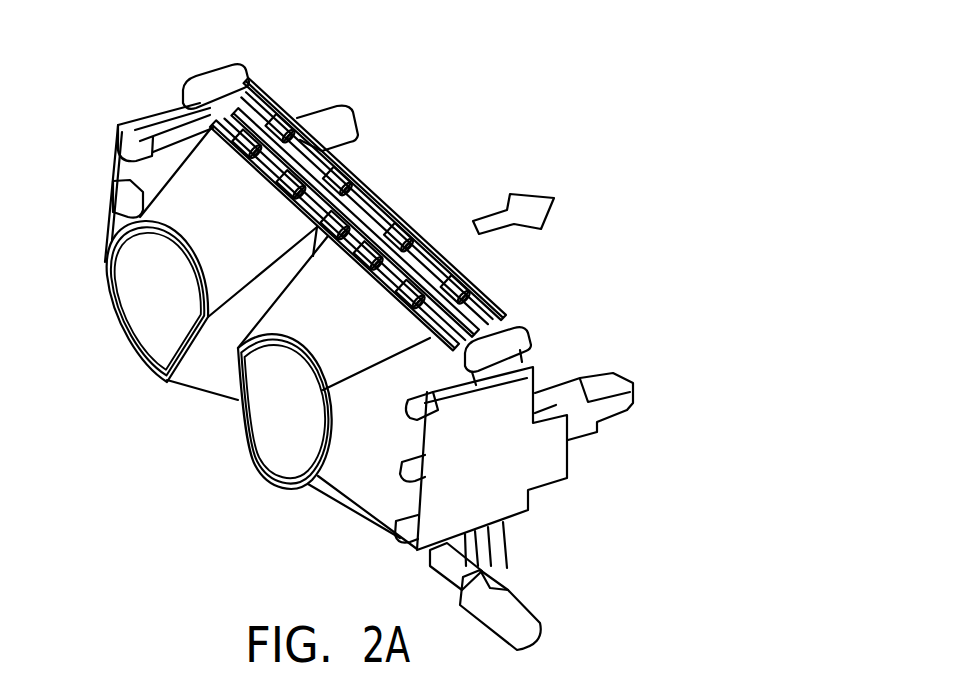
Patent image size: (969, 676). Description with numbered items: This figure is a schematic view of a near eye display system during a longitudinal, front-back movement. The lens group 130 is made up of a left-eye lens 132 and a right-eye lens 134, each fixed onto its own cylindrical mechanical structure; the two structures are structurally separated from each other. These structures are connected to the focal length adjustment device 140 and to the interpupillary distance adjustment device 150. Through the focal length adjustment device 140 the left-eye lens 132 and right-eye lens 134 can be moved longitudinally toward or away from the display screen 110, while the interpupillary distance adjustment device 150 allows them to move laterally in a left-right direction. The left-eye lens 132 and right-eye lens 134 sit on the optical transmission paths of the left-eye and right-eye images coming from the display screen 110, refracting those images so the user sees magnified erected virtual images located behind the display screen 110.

The display screen 110 is at (220, 102).
The lens group 130 is at (209, 534).
The left-eye lens 132 is at (146, 328).
The right-eye lens 134 is at (262, 421).
The focal length adjustment device 140 is at (482, 325).
The interpupillary distance adjustment device 150 is at (374, 205).